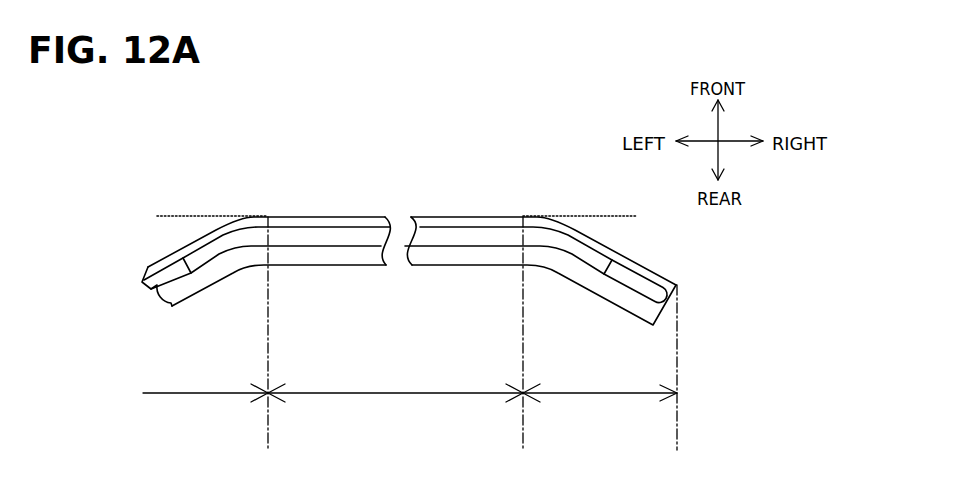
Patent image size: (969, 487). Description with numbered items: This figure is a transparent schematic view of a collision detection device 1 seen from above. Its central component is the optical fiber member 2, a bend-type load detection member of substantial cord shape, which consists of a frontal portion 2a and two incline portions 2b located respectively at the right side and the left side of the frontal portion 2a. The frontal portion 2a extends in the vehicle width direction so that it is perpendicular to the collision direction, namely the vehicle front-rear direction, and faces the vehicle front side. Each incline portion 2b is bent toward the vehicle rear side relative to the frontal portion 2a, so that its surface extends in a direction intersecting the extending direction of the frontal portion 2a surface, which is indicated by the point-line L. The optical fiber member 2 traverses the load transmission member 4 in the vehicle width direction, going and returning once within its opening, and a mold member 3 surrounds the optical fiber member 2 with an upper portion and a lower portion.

The bent bar assembly 1 is at (233, 152).
The optical fiber member 2 is at (633, 275).
The mold member 3 is at (340, 235).
The load transmission member 4 is at (465, 220).
The frontal portion 2a is at (404, 385).
The incline portion 2b is at (410, 385).
The point-line L is at (190, 213).